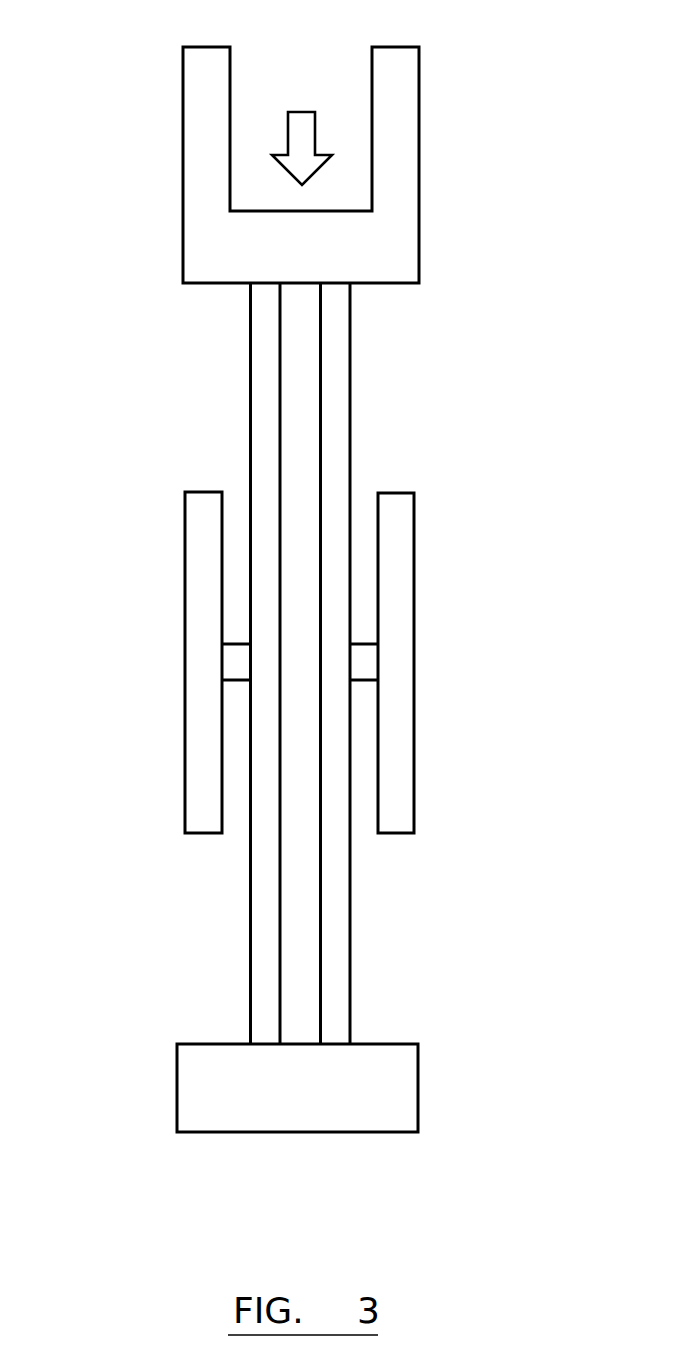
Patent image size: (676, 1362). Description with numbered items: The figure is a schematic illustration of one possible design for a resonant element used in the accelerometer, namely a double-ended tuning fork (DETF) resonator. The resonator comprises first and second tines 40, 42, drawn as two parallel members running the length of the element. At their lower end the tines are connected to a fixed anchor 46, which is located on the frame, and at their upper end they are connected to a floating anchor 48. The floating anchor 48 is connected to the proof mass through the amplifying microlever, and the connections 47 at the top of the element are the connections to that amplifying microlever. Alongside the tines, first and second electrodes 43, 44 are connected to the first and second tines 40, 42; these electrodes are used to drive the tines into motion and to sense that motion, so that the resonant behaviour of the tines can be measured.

The first tine 40 is at (335, 1002).
The second tine 42 is at (263, 1002).
The first electrode 43 is at (395, 798).
The second electrode 44 is at (202, 802).
The fixed anchor 46 is at (390, 1096).
The connections to the amplifying microlever 47 is at (392, 90).
The floating anchor 48 is at (395, 252).